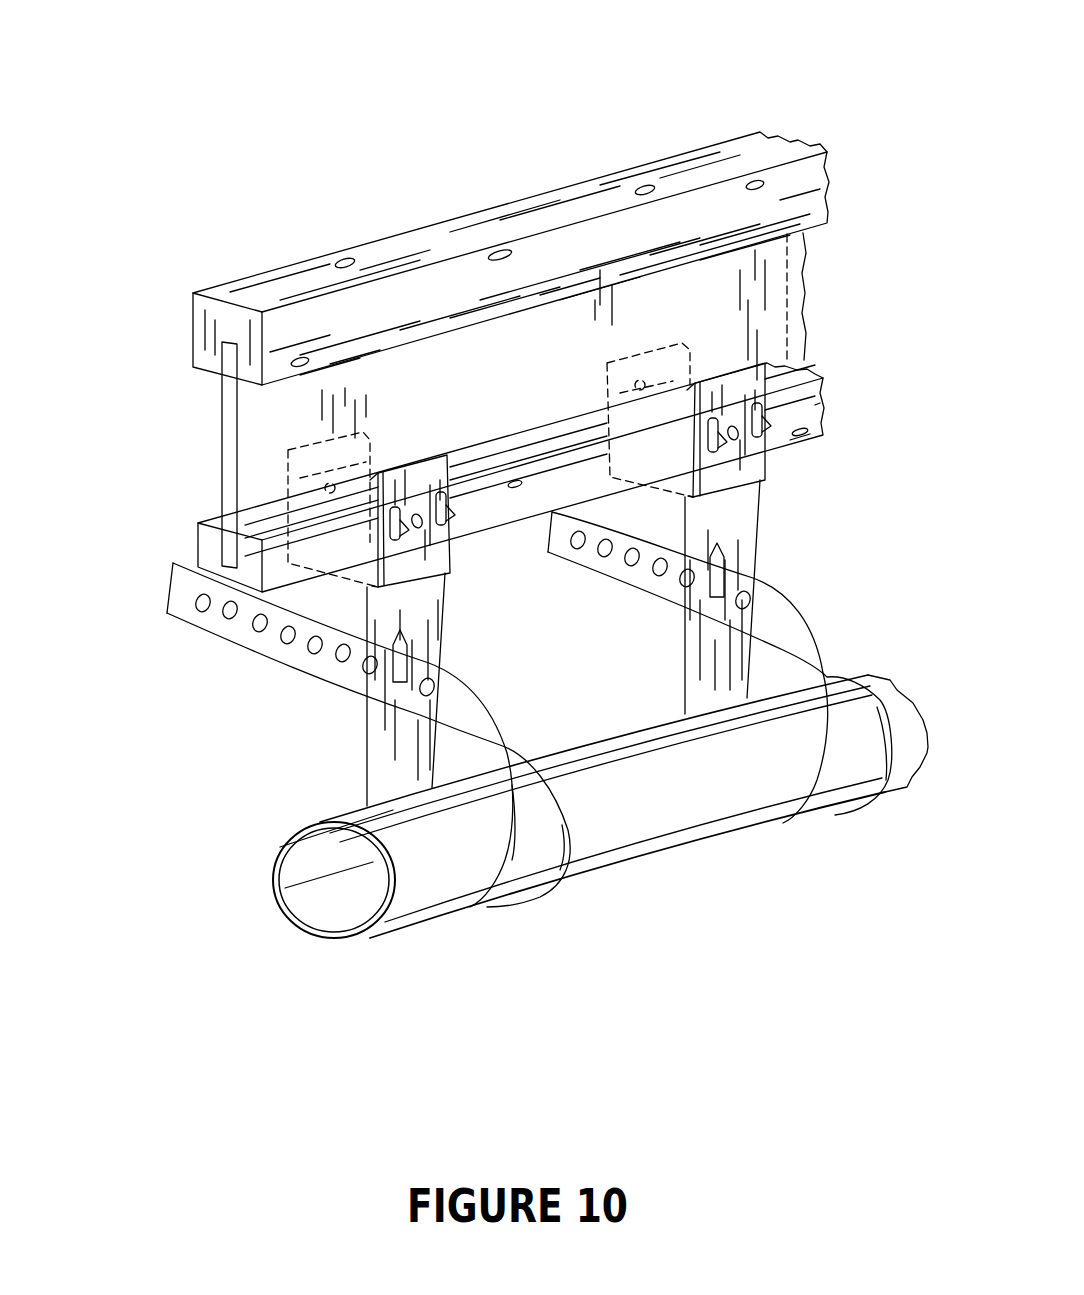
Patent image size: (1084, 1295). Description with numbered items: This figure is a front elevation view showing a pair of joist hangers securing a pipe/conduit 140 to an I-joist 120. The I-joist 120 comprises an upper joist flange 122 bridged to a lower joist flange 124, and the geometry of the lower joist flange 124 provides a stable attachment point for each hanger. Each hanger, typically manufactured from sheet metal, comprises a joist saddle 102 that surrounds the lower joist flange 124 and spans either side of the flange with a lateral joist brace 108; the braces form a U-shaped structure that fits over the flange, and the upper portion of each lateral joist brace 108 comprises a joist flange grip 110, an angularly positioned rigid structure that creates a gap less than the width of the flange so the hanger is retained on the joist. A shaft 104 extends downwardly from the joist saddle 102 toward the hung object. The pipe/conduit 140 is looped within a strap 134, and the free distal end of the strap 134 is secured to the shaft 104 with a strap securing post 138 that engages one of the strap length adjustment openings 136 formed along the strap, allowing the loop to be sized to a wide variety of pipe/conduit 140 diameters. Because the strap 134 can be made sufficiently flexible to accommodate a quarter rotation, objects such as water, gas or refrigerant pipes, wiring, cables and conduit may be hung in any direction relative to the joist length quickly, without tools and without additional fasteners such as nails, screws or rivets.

The joist saddle 102 is at (237, 520).
The shaft 104 is at (750, 537).
The lateral joist brace 108 is at (470, 457).
The joist flange grip 110 is at (365, 456).
The I-joist 120 is at (848, 300).
The upper joist flange 122 is at (540, 215).
The lower joist flange 124 is at (200, 547).
The strap 134 is at (517, 757).
The strap length adjustment opening 136 is at (228, 608).
The strap securing post 138 is at (410, 633).
The pipe/conduit 140 is at (288, 912).